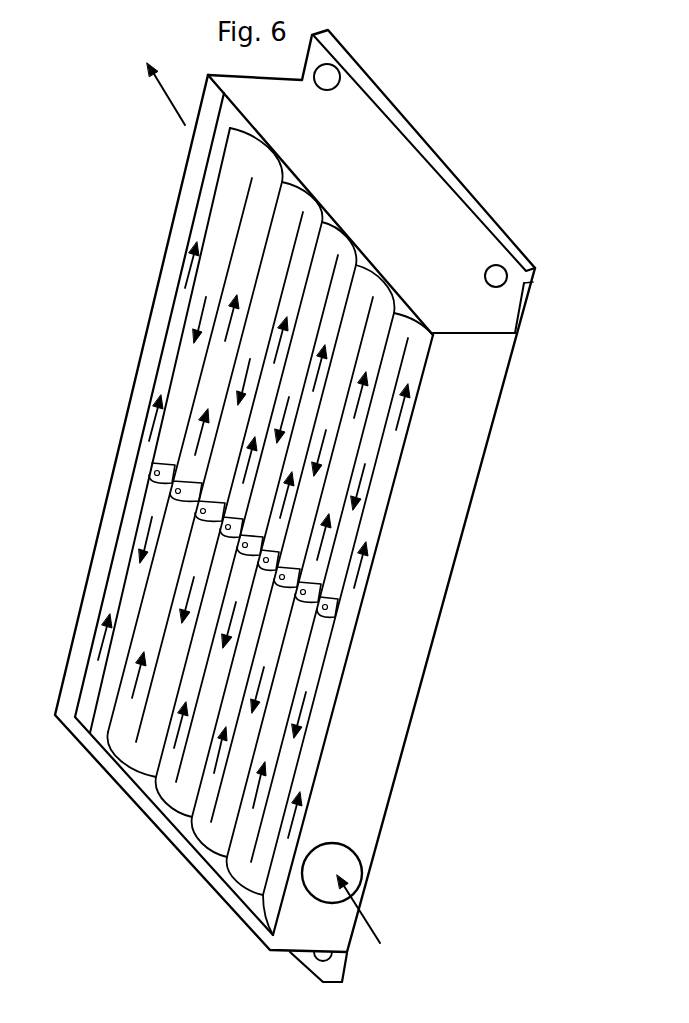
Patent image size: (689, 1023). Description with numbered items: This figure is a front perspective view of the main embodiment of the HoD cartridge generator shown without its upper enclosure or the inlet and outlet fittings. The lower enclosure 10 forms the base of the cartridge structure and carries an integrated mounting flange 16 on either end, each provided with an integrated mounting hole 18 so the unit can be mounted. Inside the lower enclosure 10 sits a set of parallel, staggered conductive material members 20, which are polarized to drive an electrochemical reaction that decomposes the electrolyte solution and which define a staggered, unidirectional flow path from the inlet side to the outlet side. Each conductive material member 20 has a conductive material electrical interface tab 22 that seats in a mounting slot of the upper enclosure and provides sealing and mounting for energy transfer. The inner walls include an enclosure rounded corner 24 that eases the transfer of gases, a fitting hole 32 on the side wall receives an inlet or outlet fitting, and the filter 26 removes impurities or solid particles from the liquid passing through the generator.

The lower enclosure 10 is at (495, 443).
The integrated mounting flange 16 is at (442, 190).
The integrated mounting hole 18 is at (502, 276).
The conductive material member 20 is at (270, 773).
The conductive material electrical interface tab 22 is at (338, 603).
The enclosure rounded corner 24 is at (233, 878).
The filter 26 is at (112, 597).
The fitting hole 32 is at (363, 867).